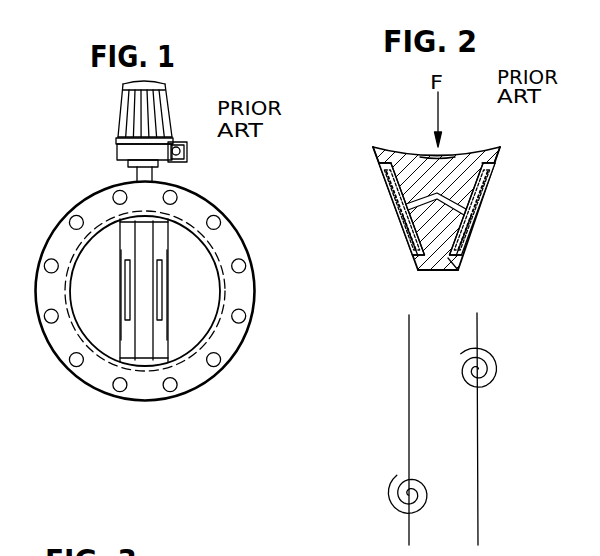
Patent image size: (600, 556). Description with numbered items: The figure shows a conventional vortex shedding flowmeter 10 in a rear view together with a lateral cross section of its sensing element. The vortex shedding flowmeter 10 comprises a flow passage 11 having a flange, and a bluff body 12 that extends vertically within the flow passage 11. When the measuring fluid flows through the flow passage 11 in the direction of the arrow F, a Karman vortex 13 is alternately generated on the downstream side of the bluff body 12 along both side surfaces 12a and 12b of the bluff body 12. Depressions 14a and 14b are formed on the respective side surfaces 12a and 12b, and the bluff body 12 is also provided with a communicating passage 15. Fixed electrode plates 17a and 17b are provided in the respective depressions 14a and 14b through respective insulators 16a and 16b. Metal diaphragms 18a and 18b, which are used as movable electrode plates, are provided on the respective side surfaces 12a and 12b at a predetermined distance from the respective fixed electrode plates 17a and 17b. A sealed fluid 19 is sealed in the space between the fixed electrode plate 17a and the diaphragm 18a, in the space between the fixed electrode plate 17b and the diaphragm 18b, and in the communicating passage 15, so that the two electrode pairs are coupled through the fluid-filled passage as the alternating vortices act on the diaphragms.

In FIG. 1, the vortex shedding flowmeter 10 is at (73, 152).
In FIG. 1, the flow passage 11 is at (195, 247).
In FIG. 1, the bluff body 12 is at (148, 243).
In FIG. 2, the bluff body 12 is at (408, 152).
In FIG. 1, the side surface 12a is at (160, 333).
In FIG. 2, the side surface 12a is at (470, 237).
In FIG. 1, the side surface 12b is at (127, 333).
In FIG. 2, the side surface 12b is at (413, 238).
In FIG. 2, the Karman vortex 13 is at (493, 343).
In FIG. 2, the depression 14a is at (467, 243).
In FIG. 2, the depression 14b is at (420, 260).
In FIG. 2, the communicating passage 15 is at (453, 153).
In FIG. 2, the insulator 16a is at (488, 147).
In FIG. 2, the insulator 16b is at (388, 147).
In FIG. 2, the fixed electrode plate 17a is at (483, 188).
In FIG. 2, the fixed electrode plate 17b is at (387, 188).
In FIG. 1, the metal diaphragm 18a is at (162, 277).
In FIG. 2, the metal diaphragm 18a is at (483, 202).
In FIG. 1, the metal diaphragm 18b is at (128, 282).
In FIG. 2, the metal diaphragm 18b is at (402, 208).
In FIG. 2, the sealed fluid 19 is at (408, 212).